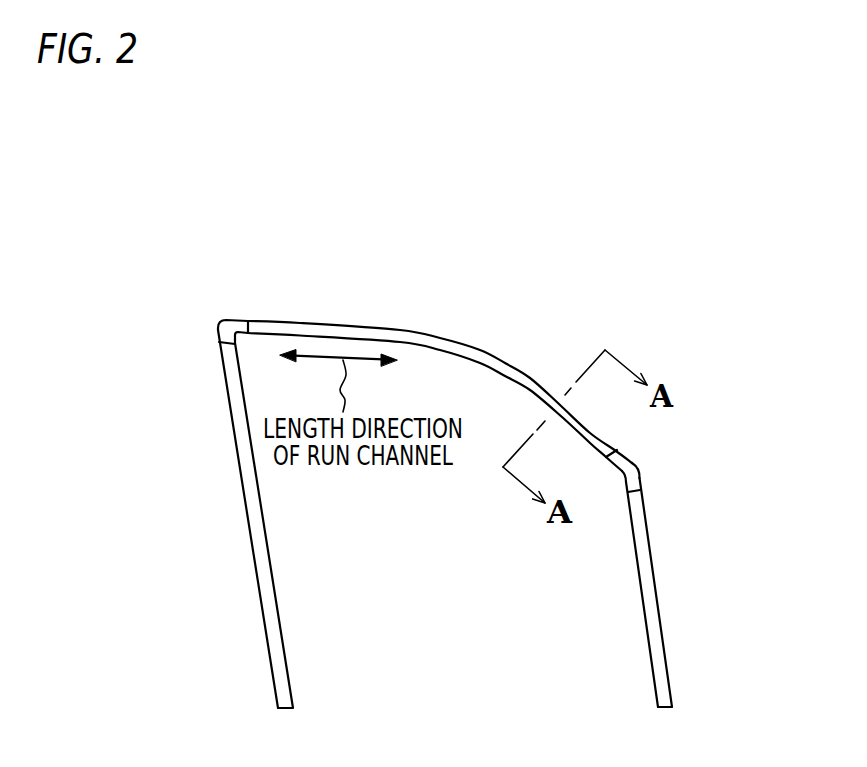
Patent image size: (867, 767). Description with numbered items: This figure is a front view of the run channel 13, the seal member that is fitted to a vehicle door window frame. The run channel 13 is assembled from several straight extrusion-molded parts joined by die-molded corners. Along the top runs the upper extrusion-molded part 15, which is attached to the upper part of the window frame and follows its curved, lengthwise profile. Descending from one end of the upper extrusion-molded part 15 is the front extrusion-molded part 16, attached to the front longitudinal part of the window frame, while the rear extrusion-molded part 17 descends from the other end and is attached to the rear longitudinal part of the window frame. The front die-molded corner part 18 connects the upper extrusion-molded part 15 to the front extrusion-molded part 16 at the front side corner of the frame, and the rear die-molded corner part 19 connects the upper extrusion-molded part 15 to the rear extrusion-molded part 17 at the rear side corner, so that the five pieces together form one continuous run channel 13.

The run channel 13 is at (447, 435).
The upper extrusion-molded part 15 is at (480, 348).
The front extrusion-molded part 16 is at (657, 607).
The rear extrusion-molded part 17 is at (250, 543).
The front die-molded corner part 18 is at (632, 462).
The rear die-molded corner part 19 is at (220, 320).